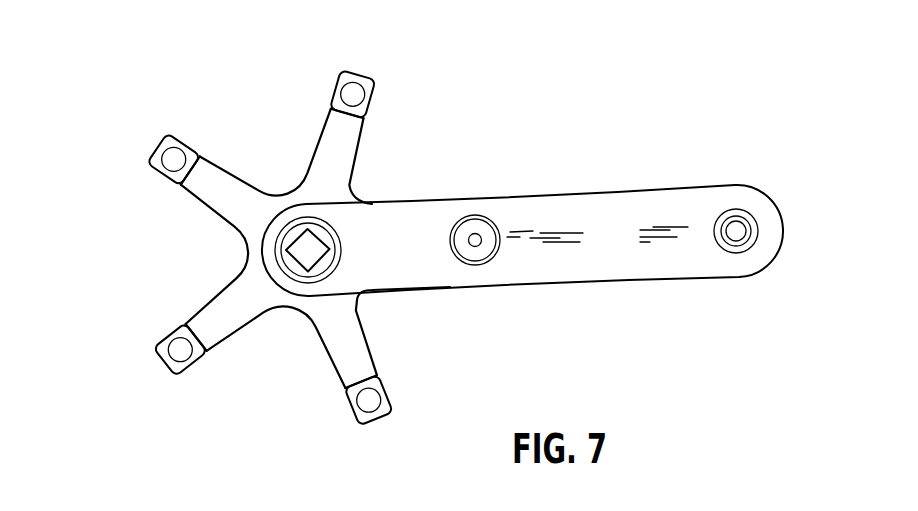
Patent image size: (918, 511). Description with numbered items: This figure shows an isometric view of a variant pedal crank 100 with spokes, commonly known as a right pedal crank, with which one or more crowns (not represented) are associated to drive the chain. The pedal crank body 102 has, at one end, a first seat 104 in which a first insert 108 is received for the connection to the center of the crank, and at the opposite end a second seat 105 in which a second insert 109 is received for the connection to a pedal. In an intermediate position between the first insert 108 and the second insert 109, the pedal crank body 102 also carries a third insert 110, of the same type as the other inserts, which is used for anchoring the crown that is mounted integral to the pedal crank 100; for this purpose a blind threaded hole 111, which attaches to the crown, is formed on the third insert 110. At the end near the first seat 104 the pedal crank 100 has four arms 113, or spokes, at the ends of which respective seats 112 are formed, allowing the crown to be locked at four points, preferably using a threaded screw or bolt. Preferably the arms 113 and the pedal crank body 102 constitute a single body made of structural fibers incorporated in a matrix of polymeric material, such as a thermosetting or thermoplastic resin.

The pedal crank with spokes 100 is at (660, 129).
The pedal crank body 102 is at (634, 266).
The first seat 104 is at (333, 232).
The second seat 105 is at (758, 228).
The first insert 108 is at (297, 267).
The second insert 109 is at (750, 212).
The third insert 110 is at (475, 215).
The blind threaded hole 111 is at (482, 236).
The seats 112 is at (340, 78).
The arms 113 is at (322, 138).